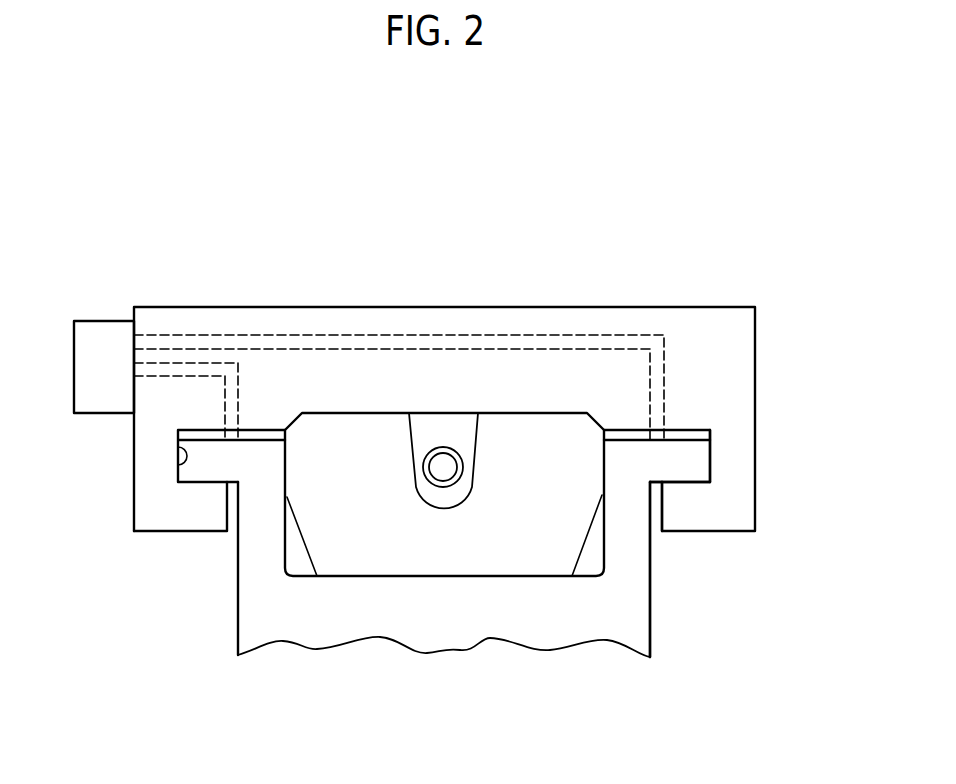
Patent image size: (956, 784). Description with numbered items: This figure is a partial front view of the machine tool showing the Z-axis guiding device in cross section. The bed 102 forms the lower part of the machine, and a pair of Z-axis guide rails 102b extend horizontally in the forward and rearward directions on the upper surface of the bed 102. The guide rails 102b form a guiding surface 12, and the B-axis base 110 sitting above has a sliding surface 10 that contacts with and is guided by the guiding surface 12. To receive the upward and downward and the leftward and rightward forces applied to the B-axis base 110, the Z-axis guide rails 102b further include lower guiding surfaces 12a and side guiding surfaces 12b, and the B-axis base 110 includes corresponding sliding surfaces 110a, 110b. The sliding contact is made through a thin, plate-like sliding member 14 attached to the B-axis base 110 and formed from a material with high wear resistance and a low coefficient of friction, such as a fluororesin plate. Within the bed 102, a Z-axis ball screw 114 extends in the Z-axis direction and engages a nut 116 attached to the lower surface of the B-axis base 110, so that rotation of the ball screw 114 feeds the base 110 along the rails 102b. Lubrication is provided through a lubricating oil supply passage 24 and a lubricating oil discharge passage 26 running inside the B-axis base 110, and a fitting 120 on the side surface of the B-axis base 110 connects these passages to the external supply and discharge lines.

The sliding surface 10 is at (210, 440).
The guiding surface 12 is at (643, 437).
The lower guiding surface 12a is at (668, 482).
The side guiding surface 12b is at (712, 457).
The sliding member 14 is at (703, 433).
The lubricating oil supply passage 24 is at (167, 370).
The lubricating oil discharge passage 26 is at (342, 337).
The bed 102 is at (272, 618).
The Z-axis guide rail 102b is at (690, 460).
The B-axis base 110 is at (482, 323).
The sliding surface 110a is at (197, 477).
The sliding surface 110b is at (178, 468).
The Z-axis ball screw 114 is at (437, 470).
The nut 116 is at (467, 447).
The fitting 120 is at (100, 338).